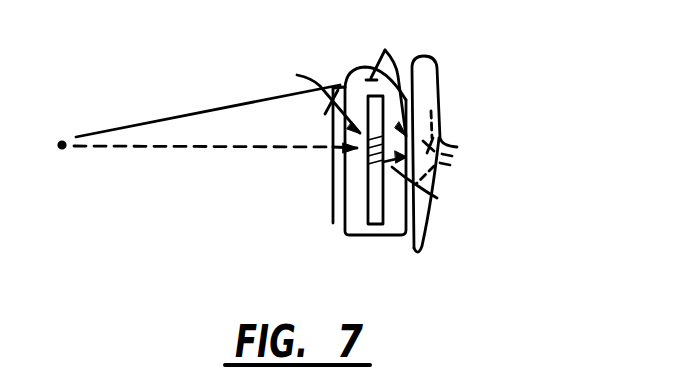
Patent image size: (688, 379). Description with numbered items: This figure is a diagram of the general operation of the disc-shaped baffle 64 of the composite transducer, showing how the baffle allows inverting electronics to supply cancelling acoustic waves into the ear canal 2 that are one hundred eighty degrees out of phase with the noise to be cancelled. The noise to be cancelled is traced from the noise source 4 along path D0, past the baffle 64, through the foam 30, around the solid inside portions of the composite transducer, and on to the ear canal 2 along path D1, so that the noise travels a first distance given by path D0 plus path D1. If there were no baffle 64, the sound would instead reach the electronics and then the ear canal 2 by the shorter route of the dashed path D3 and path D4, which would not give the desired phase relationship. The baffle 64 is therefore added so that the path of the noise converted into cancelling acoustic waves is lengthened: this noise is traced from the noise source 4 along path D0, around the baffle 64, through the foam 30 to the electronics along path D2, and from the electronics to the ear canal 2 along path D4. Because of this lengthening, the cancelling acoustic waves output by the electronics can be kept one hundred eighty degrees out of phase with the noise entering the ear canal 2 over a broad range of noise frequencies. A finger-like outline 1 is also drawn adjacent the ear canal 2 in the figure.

The finger 1 is at (440, 72).
The ear canal 2 is at (440, 110).
The noise source 4 is at (63, 148).
The foam 30 is at (398, 229).
The disc-shaped baffle 64 is at (333, 224).
The path D0 is at (188, 112).
The path D1 is at (385, 50).
The path D2 is at (297, 75).
The dashed path D3 is at (181, 150).
The path D4 is at (446, 191).